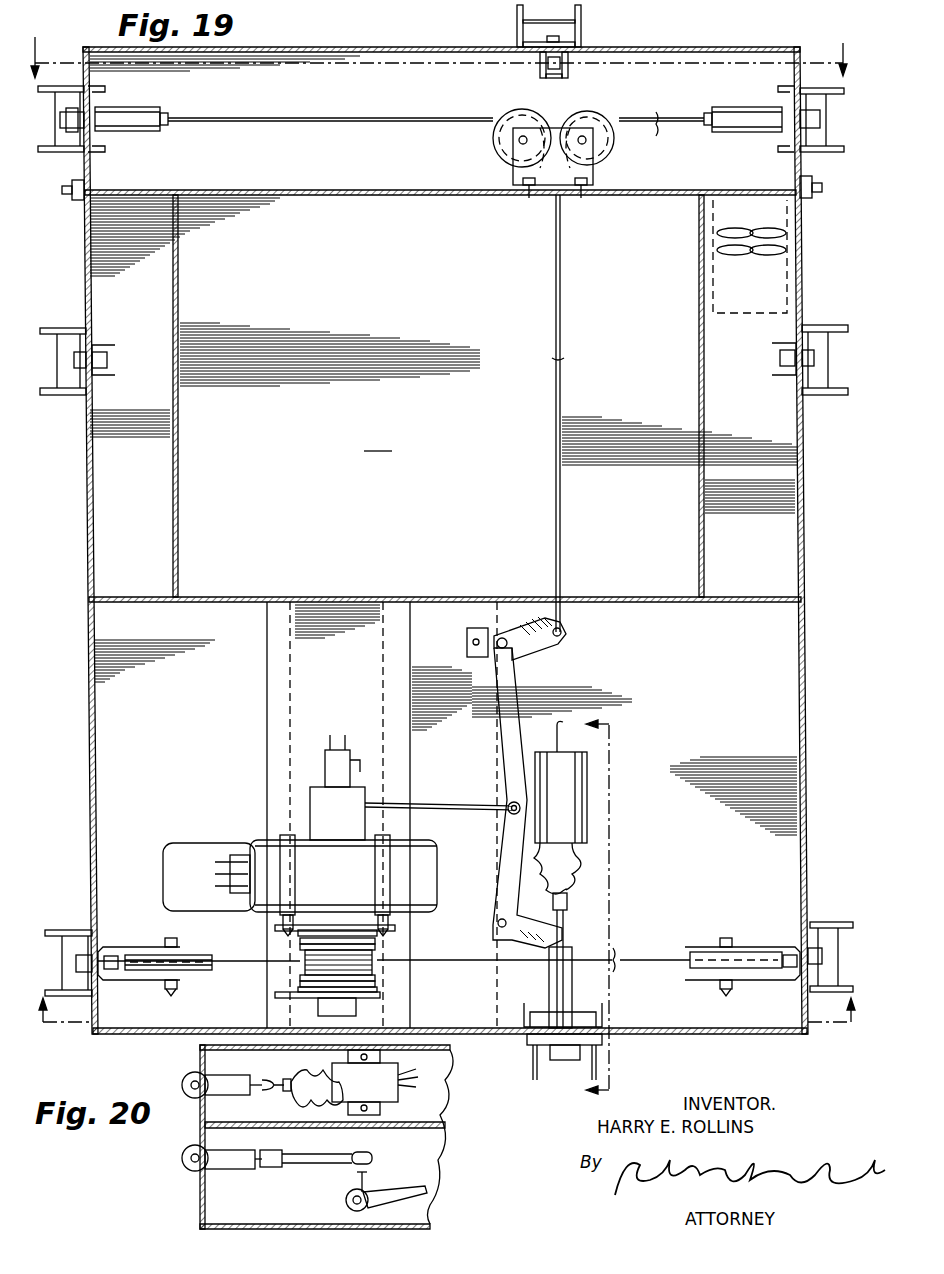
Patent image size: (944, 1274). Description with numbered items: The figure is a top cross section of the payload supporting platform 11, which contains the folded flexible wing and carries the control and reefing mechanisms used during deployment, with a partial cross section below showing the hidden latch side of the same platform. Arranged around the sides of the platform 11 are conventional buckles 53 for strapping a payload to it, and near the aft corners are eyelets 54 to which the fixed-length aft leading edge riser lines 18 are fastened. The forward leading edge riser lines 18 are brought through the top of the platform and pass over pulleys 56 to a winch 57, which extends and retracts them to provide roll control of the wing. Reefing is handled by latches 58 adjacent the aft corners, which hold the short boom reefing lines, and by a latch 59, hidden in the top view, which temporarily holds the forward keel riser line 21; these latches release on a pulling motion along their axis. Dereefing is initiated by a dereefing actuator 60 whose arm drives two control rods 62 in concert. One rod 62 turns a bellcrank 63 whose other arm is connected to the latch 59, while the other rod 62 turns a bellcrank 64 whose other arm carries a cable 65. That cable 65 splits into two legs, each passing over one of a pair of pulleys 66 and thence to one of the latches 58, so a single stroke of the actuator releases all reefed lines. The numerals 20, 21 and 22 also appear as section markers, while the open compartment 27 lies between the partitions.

In FIG. 19, the payload supporting platform 11 is at (412, 42).
In FIG. 19, the leading edge riser lines 18 is at (218, 960).
In FIG. 19, the solenoid / section line 20 is at (583, 908).
In FIG. 19, the keel riser line 21 is at (447, 1032).
In FIG. 19, the section line 22 is at (439, 46).
In FIG. 19, the compartment 27 is at (378, 442).
In FIG. 19, the buckles 53 is at (590, 12).
In FIG. 19, the eyelets 54 is at (70, 200).
In FIG. 19, the pulleys 56 is at (190, 975).
In FIG. 19, the winch 57 is at (375, 975).
In FIG. 19, the latches 58 is at (135, 112).
In FIG. 20, the latch 59 is at (190, 1163).
In FIG. 19, the dereefing actuator 60 is at (346, 819).
In FIG. 19, the control rods 62 is at (430, 803).
In FIG. 20, the control rods 62 is at (372, 1158).
In FIG. 19, the bellcrank 63 is at (494, 912).
In FIG. 20, the bellcrank 63 is at (300, 1154).
In FIG. 19, the bellcrank 64 is at (520, 660).
In FIG. 20, the bellcrank 64 is at (395, 1205).
In FIG. 19, the cable 65 is at (320, 115).
In FIG. 19, the pulleys 66 is at (497, 150).